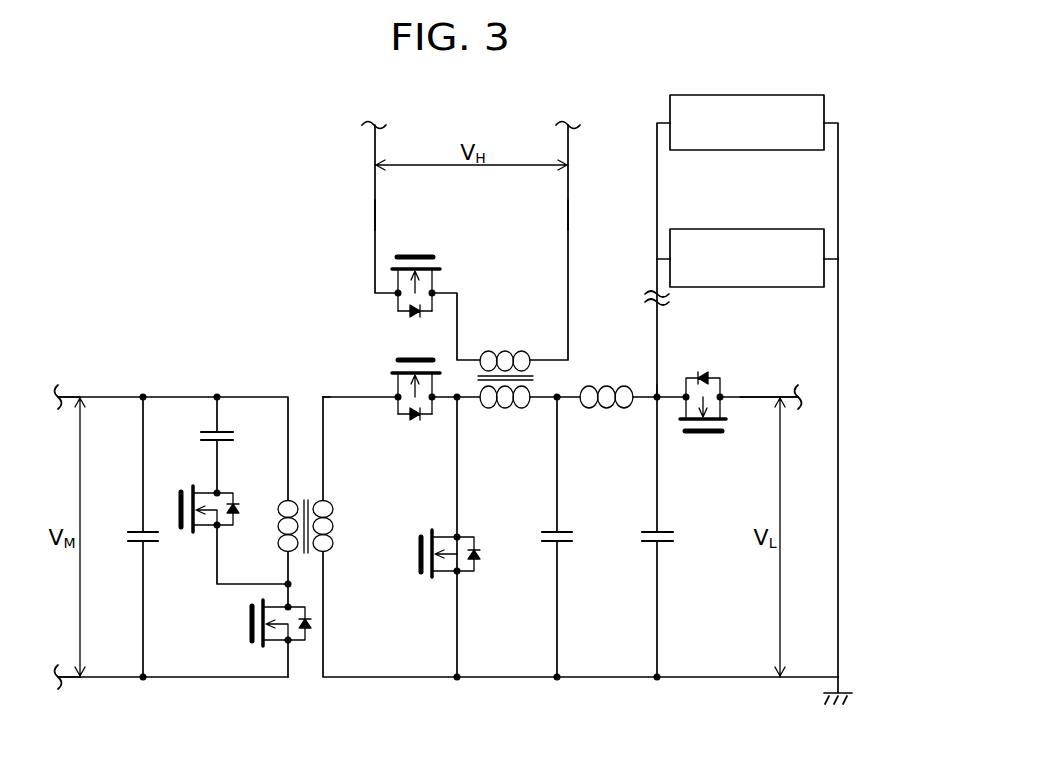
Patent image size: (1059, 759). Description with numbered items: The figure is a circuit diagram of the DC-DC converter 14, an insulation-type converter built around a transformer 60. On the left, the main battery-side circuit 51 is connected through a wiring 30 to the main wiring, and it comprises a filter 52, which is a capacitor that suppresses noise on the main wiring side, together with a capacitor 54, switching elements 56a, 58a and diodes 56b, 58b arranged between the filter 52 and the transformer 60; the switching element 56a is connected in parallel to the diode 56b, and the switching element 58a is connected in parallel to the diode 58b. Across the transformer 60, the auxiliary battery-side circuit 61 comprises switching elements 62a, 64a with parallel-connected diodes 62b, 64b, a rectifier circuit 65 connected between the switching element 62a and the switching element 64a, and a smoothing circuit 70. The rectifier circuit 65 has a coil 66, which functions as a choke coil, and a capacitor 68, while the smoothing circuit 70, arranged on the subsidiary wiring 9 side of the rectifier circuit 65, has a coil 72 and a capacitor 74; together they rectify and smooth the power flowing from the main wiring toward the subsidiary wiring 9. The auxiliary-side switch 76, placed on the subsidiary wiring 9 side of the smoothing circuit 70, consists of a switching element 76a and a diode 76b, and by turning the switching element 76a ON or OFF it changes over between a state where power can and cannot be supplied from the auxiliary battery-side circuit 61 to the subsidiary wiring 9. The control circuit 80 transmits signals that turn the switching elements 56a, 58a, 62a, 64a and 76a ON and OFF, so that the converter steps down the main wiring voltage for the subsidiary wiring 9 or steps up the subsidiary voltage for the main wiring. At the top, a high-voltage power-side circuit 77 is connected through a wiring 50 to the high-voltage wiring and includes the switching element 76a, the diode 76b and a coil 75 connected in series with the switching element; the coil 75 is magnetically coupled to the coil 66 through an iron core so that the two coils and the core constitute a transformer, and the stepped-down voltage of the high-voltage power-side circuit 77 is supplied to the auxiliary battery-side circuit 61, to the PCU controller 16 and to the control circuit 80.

The subsidiary wiring 9 is at (756, 396).
The DC-DC converter 14 is at (282, 212).
The PCU controller 16 is at (772, 94).
The wiring 30 is at (100, 677).
The wiring 50 is at (375, 212).
The main battery-side circuit 51 is at (193, 374).
The filter 52 is at (150, 532).
The capacitor 54 is at (222, 425).
The switching element 56a is at (176, 528).
The diode 56b is at (237, 514).
The switching element 58a is at (248, 645).
The diode 58b is at (307, 630).
The transformer 60 is at (312, 371).
The auxiliary battery-side circuit 61 is at (362, 371).
The switching element 62a is at (420, 358).
The diode 62b is at (412, 418).
The switching element 64a is at (418, 554).
The diode 64b is at (478, 556).
The rectifier circuit 65 is at (567, 378).
The coil 66 is at (502, 410).
The capacitor 68 is at (554, 532).
The smoothing circuit 70 is at (652, 372).
The coil 72 is at (602, 410).
The capacitor 74 is at (652, 532).
The coil 75 is at (508, 350).
The auxiliary-side switch 76 is at (718, 377).
The switching element 76a is at (405, 255).
The diode 76b is at (395, 308).
The high-voltage power-side circuit 77 is at (430, 233).
The control circuit 80 is at (772, 228).